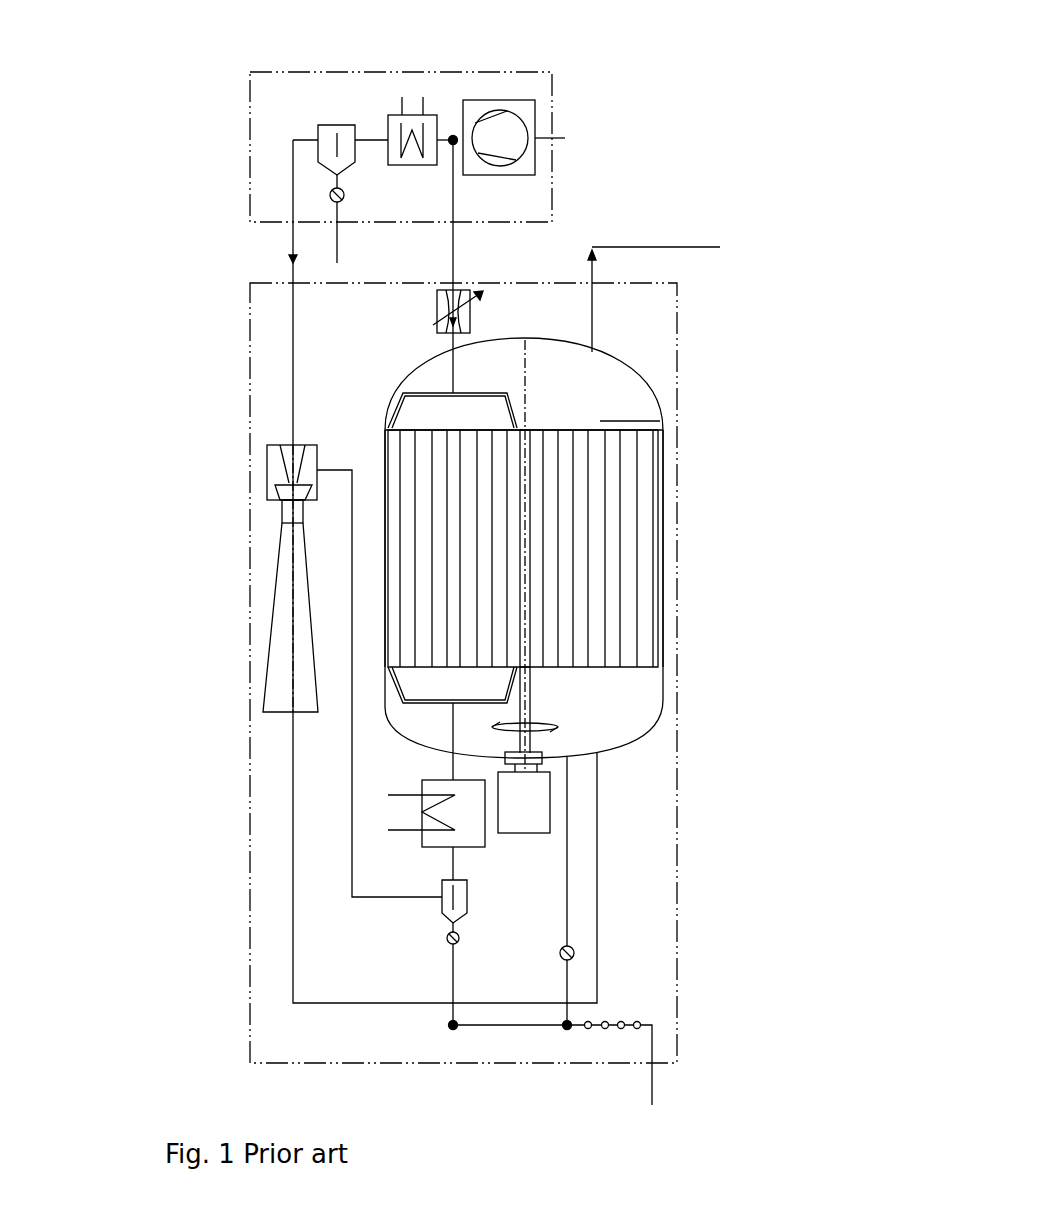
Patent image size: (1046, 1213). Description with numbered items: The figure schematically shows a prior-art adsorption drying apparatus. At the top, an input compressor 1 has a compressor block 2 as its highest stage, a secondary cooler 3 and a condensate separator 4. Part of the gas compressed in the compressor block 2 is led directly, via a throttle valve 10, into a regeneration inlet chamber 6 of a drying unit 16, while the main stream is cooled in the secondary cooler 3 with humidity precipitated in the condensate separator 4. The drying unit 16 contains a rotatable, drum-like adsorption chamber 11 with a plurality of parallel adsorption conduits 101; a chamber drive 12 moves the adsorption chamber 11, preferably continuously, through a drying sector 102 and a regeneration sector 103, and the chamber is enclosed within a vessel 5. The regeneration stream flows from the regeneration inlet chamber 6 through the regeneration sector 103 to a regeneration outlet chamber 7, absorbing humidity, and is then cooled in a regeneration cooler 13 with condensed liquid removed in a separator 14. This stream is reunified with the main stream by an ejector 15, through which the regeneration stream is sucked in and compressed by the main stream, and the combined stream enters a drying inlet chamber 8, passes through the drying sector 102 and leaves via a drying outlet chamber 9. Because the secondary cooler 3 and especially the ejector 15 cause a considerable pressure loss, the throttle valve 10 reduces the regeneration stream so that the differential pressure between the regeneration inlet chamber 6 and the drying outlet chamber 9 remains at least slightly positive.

The input compressor 1 is at (552, 72).
The compressor block 2 is at (535, 115).
The secondary cooler 3 is at (433, 115).
The condensate separator 4 is at (332, 128).
The vessel 5 is at (642, 378).
The regeneration inlet chamber 6 is at (420, 415).
The regeneration outlet chamber 7 is at (420, 712).
The drying inlet chamber 8 is at (633, 707).
The drying outlet chamber 9 is at (633, 418).
The throttle valve 10 is at (473, 320).
The adsorption chamber 11 is at (642, 543).
The chamber drive 12 is at (525, 833).
The regeneration cooler 13 is at (422, 830).
The separator 14 is at (442, 897).
The ejector 15 is at (277, 538).
The drying unit 16 is at (677, 298).
The adsorption conduits 101 is at (455, 605).
The drying sector 102 is at (600, 440).
The regeneration sector 103 is at (455, 445).